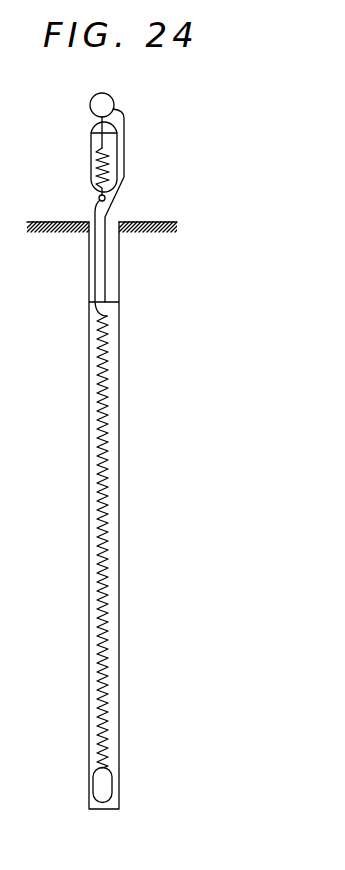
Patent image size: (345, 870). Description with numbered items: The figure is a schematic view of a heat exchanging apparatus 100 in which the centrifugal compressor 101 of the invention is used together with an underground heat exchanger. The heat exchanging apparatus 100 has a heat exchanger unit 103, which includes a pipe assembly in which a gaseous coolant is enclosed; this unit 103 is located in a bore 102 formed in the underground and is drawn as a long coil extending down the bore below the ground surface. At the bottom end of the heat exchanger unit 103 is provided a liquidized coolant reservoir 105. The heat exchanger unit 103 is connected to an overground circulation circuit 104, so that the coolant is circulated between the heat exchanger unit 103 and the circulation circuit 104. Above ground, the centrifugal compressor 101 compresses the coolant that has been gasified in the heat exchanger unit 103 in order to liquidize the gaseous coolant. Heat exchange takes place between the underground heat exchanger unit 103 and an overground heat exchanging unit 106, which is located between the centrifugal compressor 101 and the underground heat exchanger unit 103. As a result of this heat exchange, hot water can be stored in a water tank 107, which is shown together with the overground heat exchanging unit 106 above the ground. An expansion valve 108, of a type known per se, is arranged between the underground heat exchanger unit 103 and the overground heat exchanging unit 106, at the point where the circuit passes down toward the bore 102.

The heat exchanging apparatus 100 is at (215, 143).
The centrifugal compressor 101 is at (92, 97).
The bore 102 is at (119, 677).
The heat exchanger unit 103 is at (97, 518).
The circulation circuit 104 is at (124, 168).
The liquidized coolant reservoir 105 is at (112, 780).
The overground heat exchanging unit 106 is at (95, 165).
The water tank 107 is at (91, 140).
The expansion valve 108 is at (99, 198).